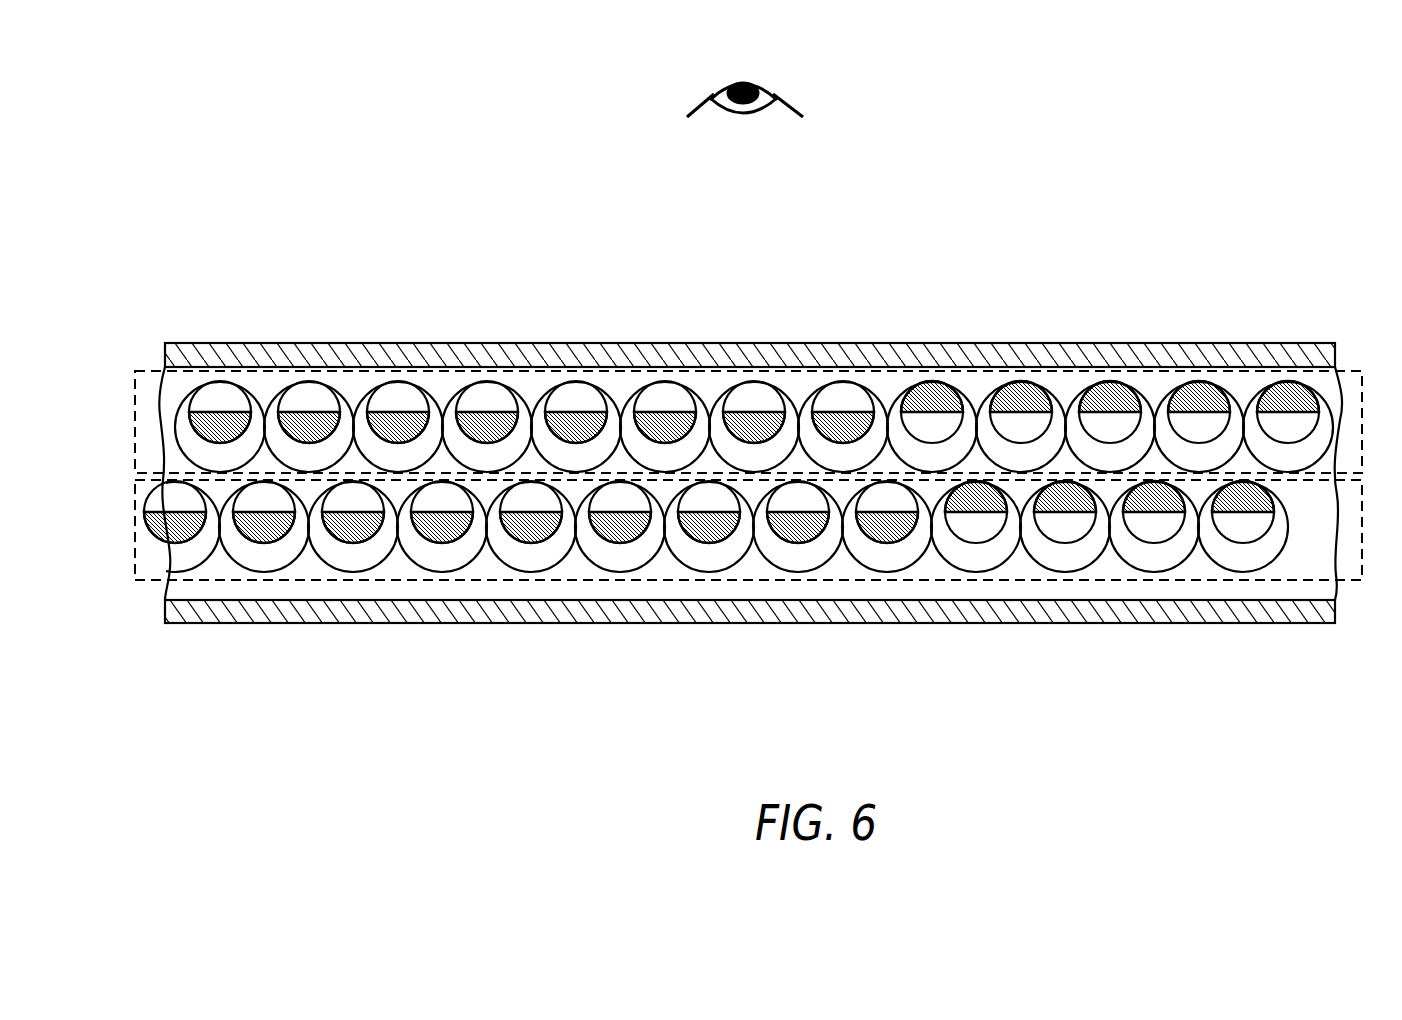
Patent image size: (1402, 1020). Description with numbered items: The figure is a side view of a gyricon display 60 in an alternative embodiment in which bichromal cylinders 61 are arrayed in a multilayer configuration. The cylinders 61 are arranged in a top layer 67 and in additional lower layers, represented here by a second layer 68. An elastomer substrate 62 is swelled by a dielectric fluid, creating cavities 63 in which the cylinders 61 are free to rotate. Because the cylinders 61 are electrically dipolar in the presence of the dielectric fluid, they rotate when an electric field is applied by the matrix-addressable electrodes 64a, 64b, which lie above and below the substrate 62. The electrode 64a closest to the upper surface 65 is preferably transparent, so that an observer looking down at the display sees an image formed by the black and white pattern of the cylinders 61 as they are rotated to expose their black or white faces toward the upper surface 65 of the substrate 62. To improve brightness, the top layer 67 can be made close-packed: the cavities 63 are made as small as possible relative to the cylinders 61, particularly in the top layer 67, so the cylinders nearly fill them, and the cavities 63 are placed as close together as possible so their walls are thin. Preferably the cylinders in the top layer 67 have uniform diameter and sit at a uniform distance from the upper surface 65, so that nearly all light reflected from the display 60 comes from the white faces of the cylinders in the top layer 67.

The gyricon display 60 is at (280, 160).
The bichromal cylinders 61 is at (845, 384).
The elastomer substrate 62 is at (737, 465).
The cavities 63 is at (975, 557).
The matrix-addressable electrode 64a is at (1130, 342).
The matrix-addressable electrode 64b is at (763, 624).
The upper surface 65 is at (487, 340).
The top layer 67 is at (135, 427).
The second layer 68 is at (135, 515).